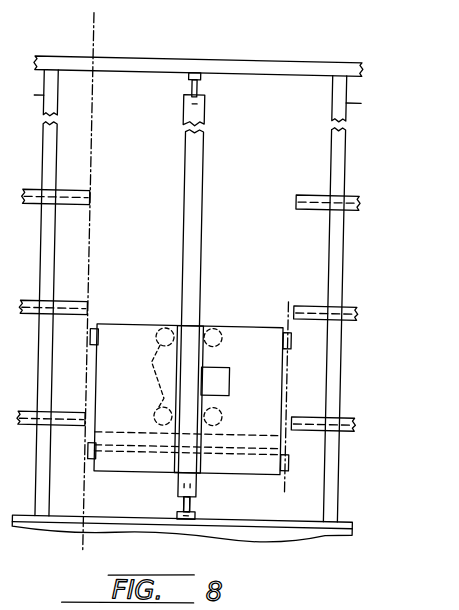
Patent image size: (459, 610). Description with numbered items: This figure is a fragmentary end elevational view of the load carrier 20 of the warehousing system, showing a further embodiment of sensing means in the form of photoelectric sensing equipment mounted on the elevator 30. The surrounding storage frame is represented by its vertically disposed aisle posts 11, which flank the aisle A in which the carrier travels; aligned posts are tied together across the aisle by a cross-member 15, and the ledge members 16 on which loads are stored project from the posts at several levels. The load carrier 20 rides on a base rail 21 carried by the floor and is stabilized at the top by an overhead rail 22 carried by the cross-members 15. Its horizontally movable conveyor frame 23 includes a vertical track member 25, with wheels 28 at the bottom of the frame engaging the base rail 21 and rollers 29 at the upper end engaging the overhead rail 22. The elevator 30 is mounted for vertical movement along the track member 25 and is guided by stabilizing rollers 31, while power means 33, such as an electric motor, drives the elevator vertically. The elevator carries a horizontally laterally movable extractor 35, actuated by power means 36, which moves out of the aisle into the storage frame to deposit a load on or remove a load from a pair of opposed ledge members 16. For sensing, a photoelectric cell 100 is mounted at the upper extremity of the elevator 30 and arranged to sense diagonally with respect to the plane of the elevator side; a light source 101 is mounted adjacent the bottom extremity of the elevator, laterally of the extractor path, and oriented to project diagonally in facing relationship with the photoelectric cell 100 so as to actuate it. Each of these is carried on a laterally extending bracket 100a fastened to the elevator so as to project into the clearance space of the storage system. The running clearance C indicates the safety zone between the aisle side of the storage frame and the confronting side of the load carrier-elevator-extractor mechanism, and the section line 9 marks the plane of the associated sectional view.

The section line 9- 9 is at (62, 37).
The aisle post 11 is at (54, 157).
The cross-member 15 is at (219, 51).
The ledge member 16 is at (66, 192).
The load carrier 20 is at (271, 296).
The base rail 21 is at (203, 516).
The overhead rail 22 is at (184, 78).
The horizontally movable conveyor frame 23 is at (200, 180).
The vertical track member 25 is at (202, 143).
The wheel 28 is at (190, 502).
The roller 29 is at (194, 84).
The elevator 30 is at (147, 326).
The stabilizing roller 31 is at (238, 337).
The power means 33 is at (232, 372).
The extractor 35 is at (250, 446).
The power means 36 is at (251, 448).
The photoelectric cell 100 is at (91, 344).
The bracket 100a is at (100, 326).
The light source 101 is at (91, 454).
The aisle A is at (276, 116).
The running clearance C is at (274, 297).